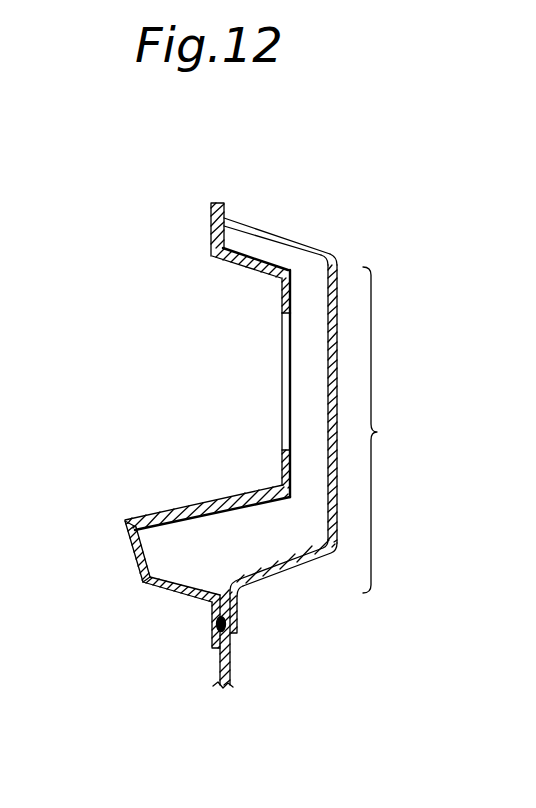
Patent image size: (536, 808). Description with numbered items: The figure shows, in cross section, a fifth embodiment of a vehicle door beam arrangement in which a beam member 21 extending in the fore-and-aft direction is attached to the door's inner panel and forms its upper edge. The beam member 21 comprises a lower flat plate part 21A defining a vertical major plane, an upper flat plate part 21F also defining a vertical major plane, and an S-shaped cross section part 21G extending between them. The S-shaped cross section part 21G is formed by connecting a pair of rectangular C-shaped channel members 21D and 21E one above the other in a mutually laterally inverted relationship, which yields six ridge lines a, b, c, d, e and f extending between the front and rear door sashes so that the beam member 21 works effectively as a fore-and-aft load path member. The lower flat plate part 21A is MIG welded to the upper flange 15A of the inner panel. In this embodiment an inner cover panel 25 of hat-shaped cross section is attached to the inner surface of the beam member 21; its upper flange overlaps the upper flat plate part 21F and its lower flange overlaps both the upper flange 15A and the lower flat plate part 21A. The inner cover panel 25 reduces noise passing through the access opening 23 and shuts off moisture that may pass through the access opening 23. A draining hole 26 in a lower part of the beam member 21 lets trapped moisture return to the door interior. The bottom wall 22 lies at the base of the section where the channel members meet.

The beam member 21 is at (297, 210).
The upper flat plate part 21F is at (229, 220).
The rectangular C-shaped channel member 21D is at (283, 293).
The rectangular C-shaped channel member 21E is at (130, 552).
The S-shaped cross section part 21G is at (399, 430).
The lower flat plate part 21A is at (216, 631).
The bottom wall 22 is at (283, 462).
The access opening 23 is at (282, 318).
The inner cover panel 25 is at (338, 292).
The draining hole 26 is at (198, 592).
The upper flange 15A is at (237, 641).
The ridge line a is at (212, 257).
The ridge line b is at (312, 252).
The ridge line c is at (291, 496).
The ridge line d is at (127, 522).
The ridge line e is at (142, 587).
The ridge line f is at (238, 598).